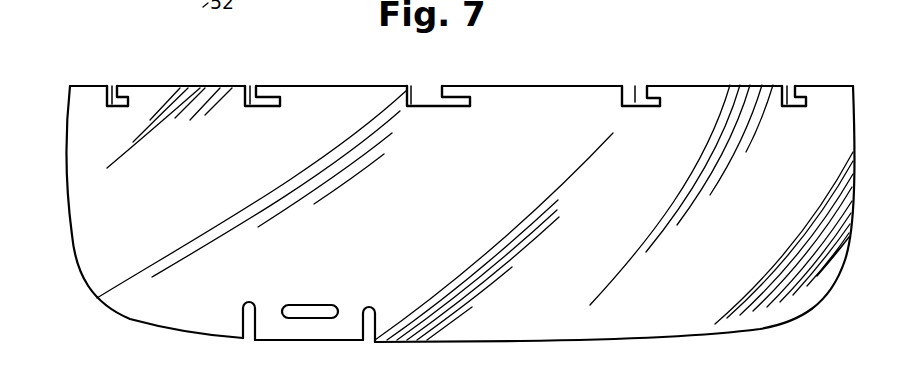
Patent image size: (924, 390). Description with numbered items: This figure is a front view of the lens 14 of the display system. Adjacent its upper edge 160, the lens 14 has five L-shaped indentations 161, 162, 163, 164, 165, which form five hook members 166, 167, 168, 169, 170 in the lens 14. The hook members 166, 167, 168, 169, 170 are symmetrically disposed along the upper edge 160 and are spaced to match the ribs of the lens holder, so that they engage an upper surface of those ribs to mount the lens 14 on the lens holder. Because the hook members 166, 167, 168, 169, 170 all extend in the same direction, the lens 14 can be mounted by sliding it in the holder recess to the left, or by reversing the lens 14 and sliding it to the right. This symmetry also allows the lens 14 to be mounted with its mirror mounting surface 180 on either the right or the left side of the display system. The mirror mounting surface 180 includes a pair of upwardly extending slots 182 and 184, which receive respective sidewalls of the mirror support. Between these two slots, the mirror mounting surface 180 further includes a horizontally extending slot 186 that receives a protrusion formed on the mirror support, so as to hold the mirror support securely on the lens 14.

The lens 14 is at (778, 322).
The upper edge 160 is at (509, 88).
The L-shaped indentation 161 is at (113, 85).
The L-shaped indentation 162 is at (258, 85).
The L-shaped indentation 163 is at (418, 86).
The L-shaped indentation 164 is at (631, 86).
The L-shaped indentation 165 is at (783, 86).
The hook member 166 is at (124, 86).
The hook member 167 is at (262, 86).
The hook member 168 is at (452, 86).
The hook member 169 is at (645, 86).
The hook member 170 is at (796, 86).
The mirror mounting surface 180 is at (322, 323).
The upwardly extending slot 182 is at (248, 336).
The upwardly extending slot 184 is at (368, 346).
The horizontally extending slot 186 is at (310, 312).